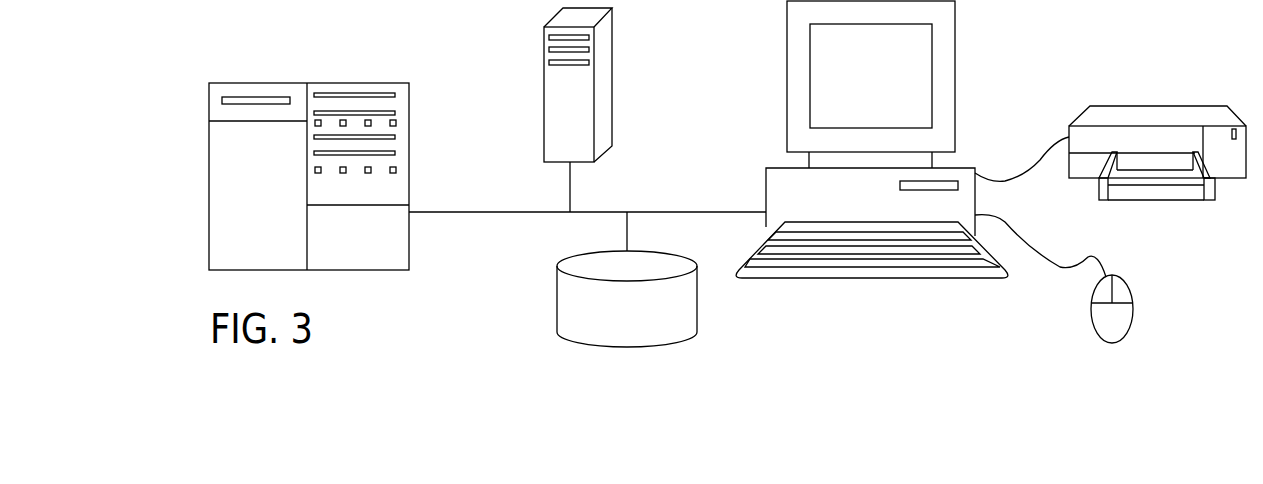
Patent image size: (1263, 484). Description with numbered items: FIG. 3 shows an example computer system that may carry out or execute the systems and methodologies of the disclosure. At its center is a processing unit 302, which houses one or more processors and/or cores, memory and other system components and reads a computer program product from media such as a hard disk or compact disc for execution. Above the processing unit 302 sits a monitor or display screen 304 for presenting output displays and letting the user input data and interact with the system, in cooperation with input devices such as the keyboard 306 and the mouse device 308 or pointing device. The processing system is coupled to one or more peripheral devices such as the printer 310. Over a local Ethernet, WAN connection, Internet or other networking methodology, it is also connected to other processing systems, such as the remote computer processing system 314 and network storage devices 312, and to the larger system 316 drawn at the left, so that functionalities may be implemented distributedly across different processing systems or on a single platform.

The processing unit 302 is at (772, 187).
The monitor or display screen 304 is at (956, 75).
The keyboard 306 is at (910, 278).
The mouse device 308 is at (1133, 320).
The printer 310 is at (1163, 106).
The network storage devices 312 is at (557, 302).
The remote computer processing system 314 is at (645, 56).
The mainframe / server system 316 is at (370, 83).